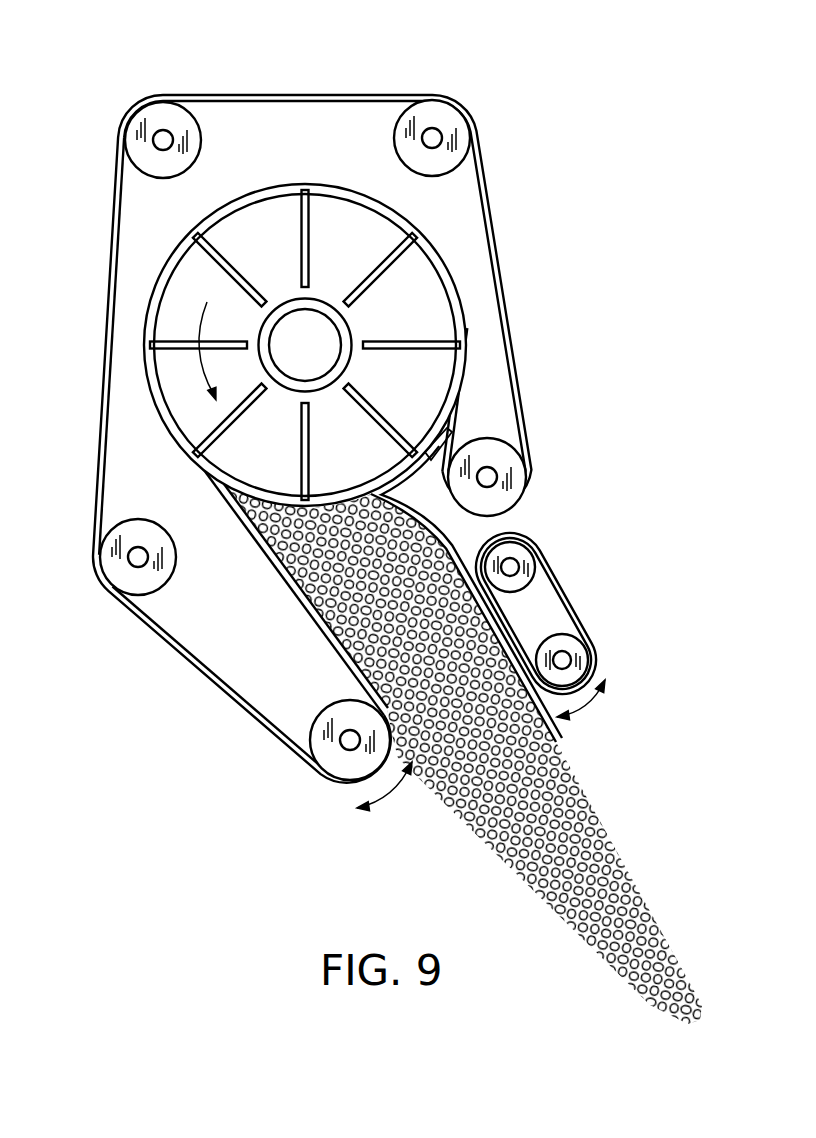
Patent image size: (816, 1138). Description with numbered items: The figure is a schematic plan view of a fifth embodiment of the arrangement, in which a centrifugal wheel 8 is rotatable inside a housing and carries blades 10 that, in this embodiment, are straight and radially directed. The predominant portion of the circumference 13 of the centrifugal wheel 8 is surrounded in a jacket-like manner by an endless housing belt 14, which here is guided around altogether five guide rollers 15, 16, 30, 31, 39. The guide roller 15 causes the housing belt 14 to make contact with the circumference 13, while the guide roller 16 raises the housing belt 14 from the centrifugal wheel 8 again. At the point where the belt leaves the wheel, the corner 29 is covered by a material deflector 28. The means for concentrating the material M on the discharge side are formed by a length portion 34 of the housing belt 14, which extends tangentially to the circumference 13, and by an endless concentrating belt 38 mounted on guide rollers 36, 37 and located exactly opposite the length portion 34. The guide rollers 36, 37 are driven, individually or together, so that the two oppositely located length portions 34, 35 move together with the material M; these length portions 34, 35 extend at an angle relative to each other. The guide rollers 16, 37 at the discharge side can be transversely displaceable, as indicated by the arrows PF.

The centrifugal wheel 8 is at (428, 318).
The blades 10 is at (383, 270).
The circumference 13 is at (153, 273).
The housing belt 14 is at (493, 195).
The guide roller 15 is at (518, 485).
The guide roller 16 is at (333, 757).
The material deflector 28 is at (436, 448).
The corner 29 is at (458, 436).
The guide roller 30 is at (438, 110).
The guide roller 31 is at (162, 113).
The length portion 34 is at (318, 628).
The length portion 35 is at (517, 623).
The guide roller 36 is at (525, 550).
The guide roller 37 is at (573, 663).
The concentrating belt 38 is at (590, 625).
The guide roller 39 is at (120, 577).
The material M is at (575, 885).
The arrows PF is at (508, 784).